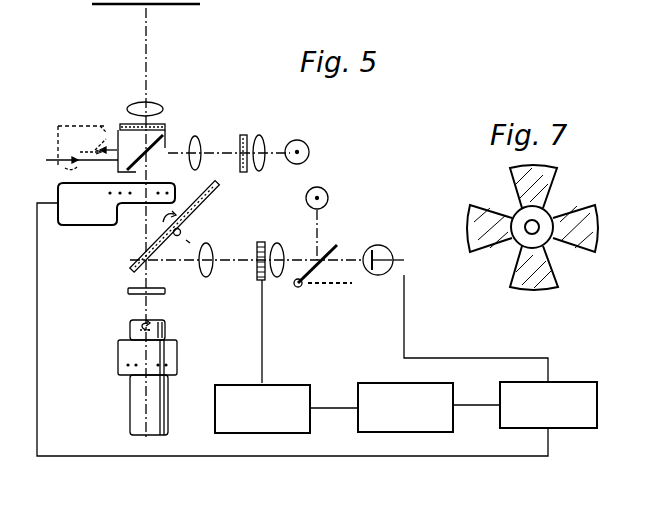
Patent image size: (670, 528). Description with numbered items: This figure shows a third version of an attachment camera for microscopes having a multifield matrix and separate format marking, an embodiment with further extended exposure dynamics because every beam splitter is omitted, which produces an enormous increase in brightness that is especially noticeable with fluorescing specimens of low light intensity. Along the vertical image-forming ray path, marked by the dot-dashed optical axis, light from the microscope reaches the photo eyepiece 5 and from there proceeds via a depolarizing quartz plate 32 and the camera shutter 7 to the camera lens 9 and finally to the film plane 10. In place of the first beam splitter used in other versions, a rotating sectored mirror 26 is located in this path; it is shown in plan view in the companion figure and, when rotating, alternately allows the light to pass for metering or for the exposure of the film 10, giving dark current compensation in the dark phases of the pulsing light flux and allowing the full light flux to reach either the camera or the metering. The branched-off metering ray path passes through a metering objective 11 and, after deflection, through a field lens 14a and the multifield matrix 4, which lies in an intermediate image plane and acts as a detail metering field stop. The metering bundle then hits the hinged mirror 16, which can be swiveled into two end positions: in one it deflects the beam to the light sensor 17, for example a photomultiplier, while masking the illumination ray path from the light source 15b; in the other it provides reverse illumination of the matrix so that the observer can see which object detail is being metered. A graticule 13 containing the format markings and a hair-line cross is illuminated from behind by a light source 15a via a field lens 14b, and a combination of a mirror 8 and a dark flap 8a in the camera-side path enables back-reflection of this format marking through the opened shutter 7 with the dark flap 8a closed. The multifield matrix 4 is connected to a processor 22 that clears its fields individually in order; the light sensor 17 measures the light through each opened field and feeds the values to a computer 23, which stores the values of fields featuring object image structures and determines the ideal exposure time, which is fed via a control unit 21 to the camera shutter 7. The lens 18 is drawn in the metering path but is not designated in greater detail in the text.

In FIG. 5, the film plane 10 is at (110, 10).
In FIG. 5, the camera lens 9 is at (133, 103).
In FIG. 5, the mirror 8 is at (97, 148).
In FIG. 5, the dark flap 8a is at (106, 121).
In FIG. 5, the camera shutter 7 is at (95, 210).
In FIG. 5, the rotating sectored mirror 26 is at (130, 268).
In FIG. 7, the rotating sectored mirror 26 is at (548, 268).
In FIG. 5, the depolarizing quartz plate 32 is at (128, 291).
In FIG. 5, the metering objective 11 is at (210, 278).
In FIG. 5, the multifield matrix 4 is at (257, 268).
In FIG. 5, the field lens 14a is at (280, 278).
In FIG. 5, the hinged mirror 16 is at (318, 280).
In FIG. 5, the light source 15b is at (329, 198).
In FIG. 5, the light sensor 17 is at (385, 248).
In FIG. 5, the lens 18 is at (193, 136).
In FIG. 5, the graticule 13 is at (243, 133).
In FIG. 5, the field lens 14b is at (272, 124).
In FIG. 5, the light source 15a is at (310, 152).
In FIG. 5, the photo eyepiece 5 is at (130, 356).
In FIG. 5, the processor 22 is at (270, 418).
In FIG. 5, the computer 23 is at (413, 417).
In FIG. 5, the control unit 21 is at (555, 416).